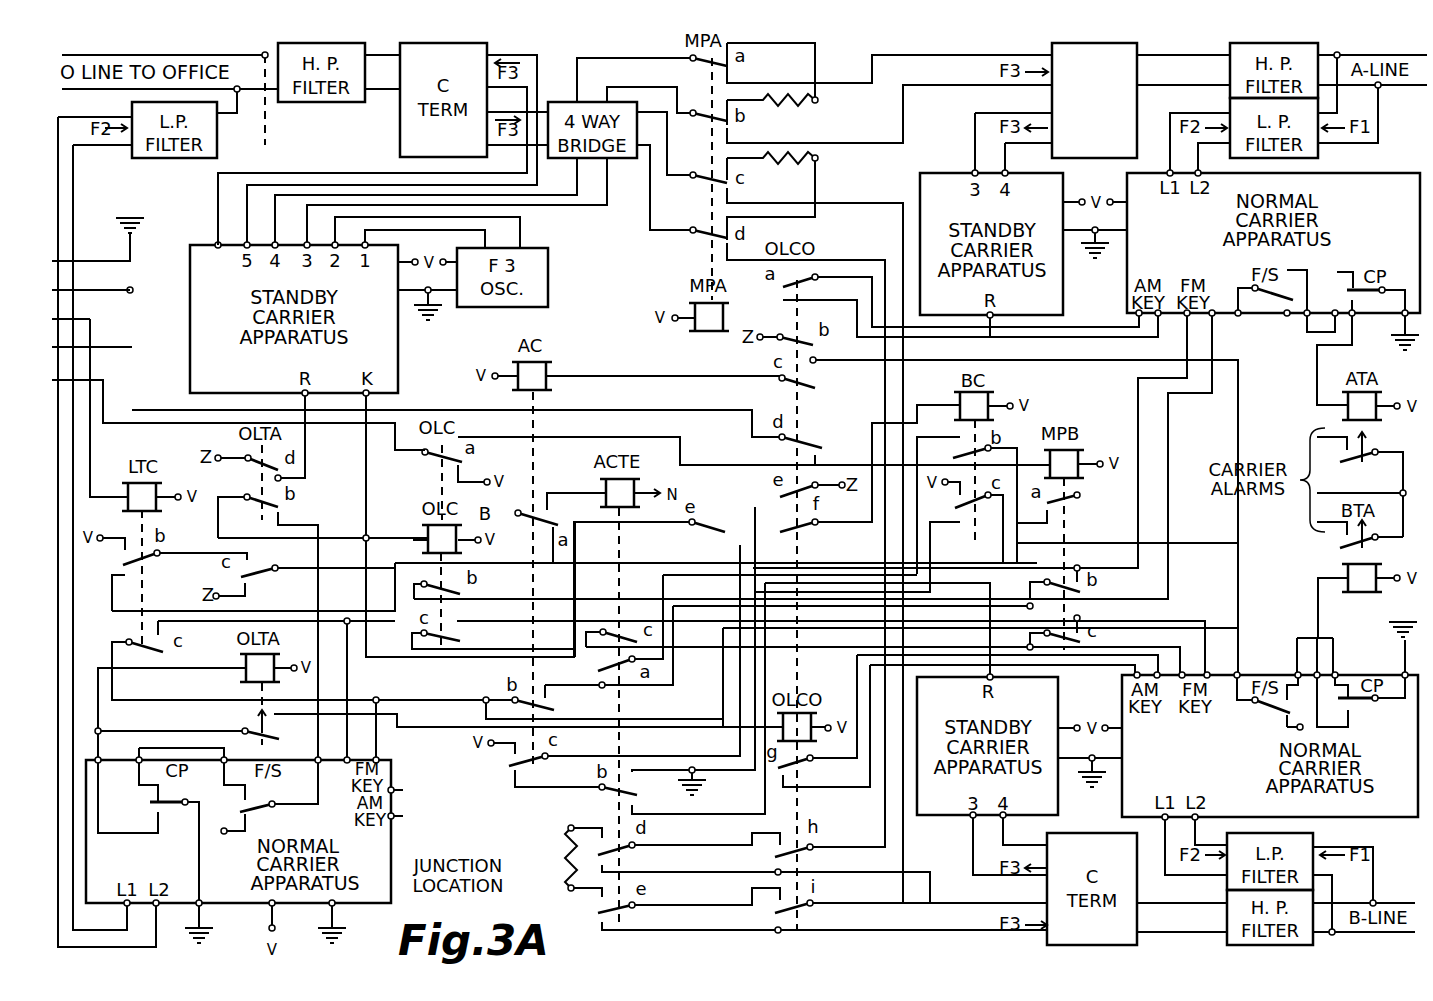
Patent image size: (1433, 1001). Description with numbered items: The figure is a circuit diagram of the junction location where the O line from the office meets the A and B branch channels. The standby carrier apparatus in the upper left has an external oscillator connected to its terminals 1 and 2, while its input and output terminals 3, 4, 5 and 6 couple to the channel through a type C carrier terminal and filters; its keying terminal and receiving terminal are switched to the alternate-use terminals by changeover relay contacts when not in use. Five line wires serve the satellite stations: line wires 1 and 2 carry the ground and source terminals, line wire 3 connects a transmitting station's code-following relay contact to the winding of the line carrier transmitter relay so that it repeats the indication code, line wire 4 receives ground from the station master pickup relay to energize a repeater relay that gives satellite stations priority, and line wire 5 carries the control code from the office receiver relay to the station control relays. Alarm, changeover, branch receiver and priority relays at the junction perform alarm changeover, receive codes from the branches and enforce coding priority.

The line wire 1 is at (103, 262).
The line wire 2 is at (100, 292).
The line wire 3 is at (90, 318).
The line wire 4 is at (119, 347).
The line wire 5 is at (103, 380).
The input/output terminal 6 is at (369, 222).